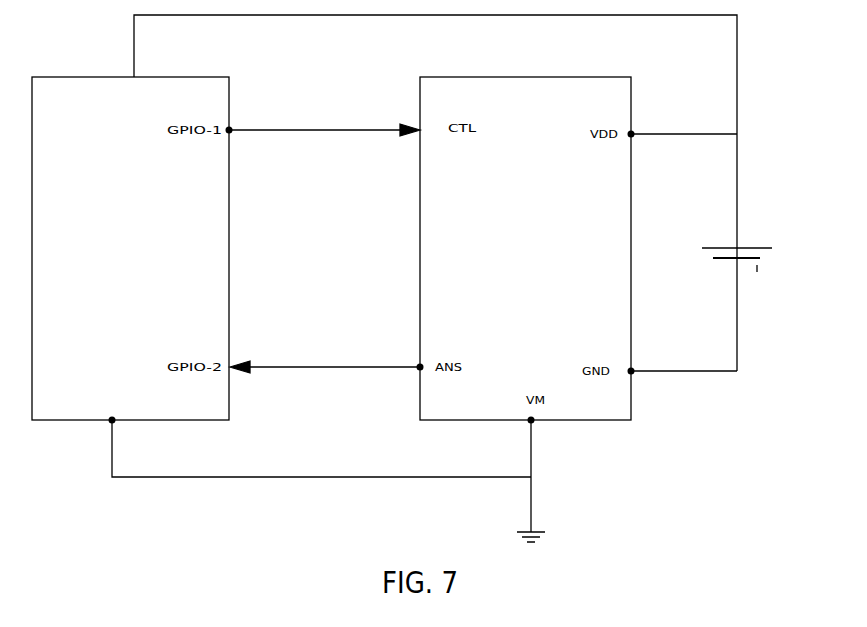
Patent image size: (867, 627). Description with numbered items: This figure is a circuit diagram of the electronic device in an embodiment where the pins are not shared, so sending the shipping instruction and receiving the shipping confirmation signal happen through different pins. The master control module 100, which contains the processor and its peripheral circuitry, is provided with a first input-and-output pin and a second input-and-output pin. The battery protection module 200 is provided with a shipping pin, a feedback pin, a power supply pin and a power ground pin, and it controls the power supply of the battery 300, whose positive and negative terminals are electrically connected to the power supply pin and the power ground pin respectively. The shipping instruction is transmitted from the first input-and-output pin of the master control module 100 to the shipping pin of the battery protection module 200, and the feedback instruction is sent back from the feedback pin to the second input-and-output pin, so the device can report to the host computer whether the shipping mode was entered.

The master control module 100 is at (213, 293).
The battery protection module 200 is at (613, 327).
The battery 300 is at (742, 238).